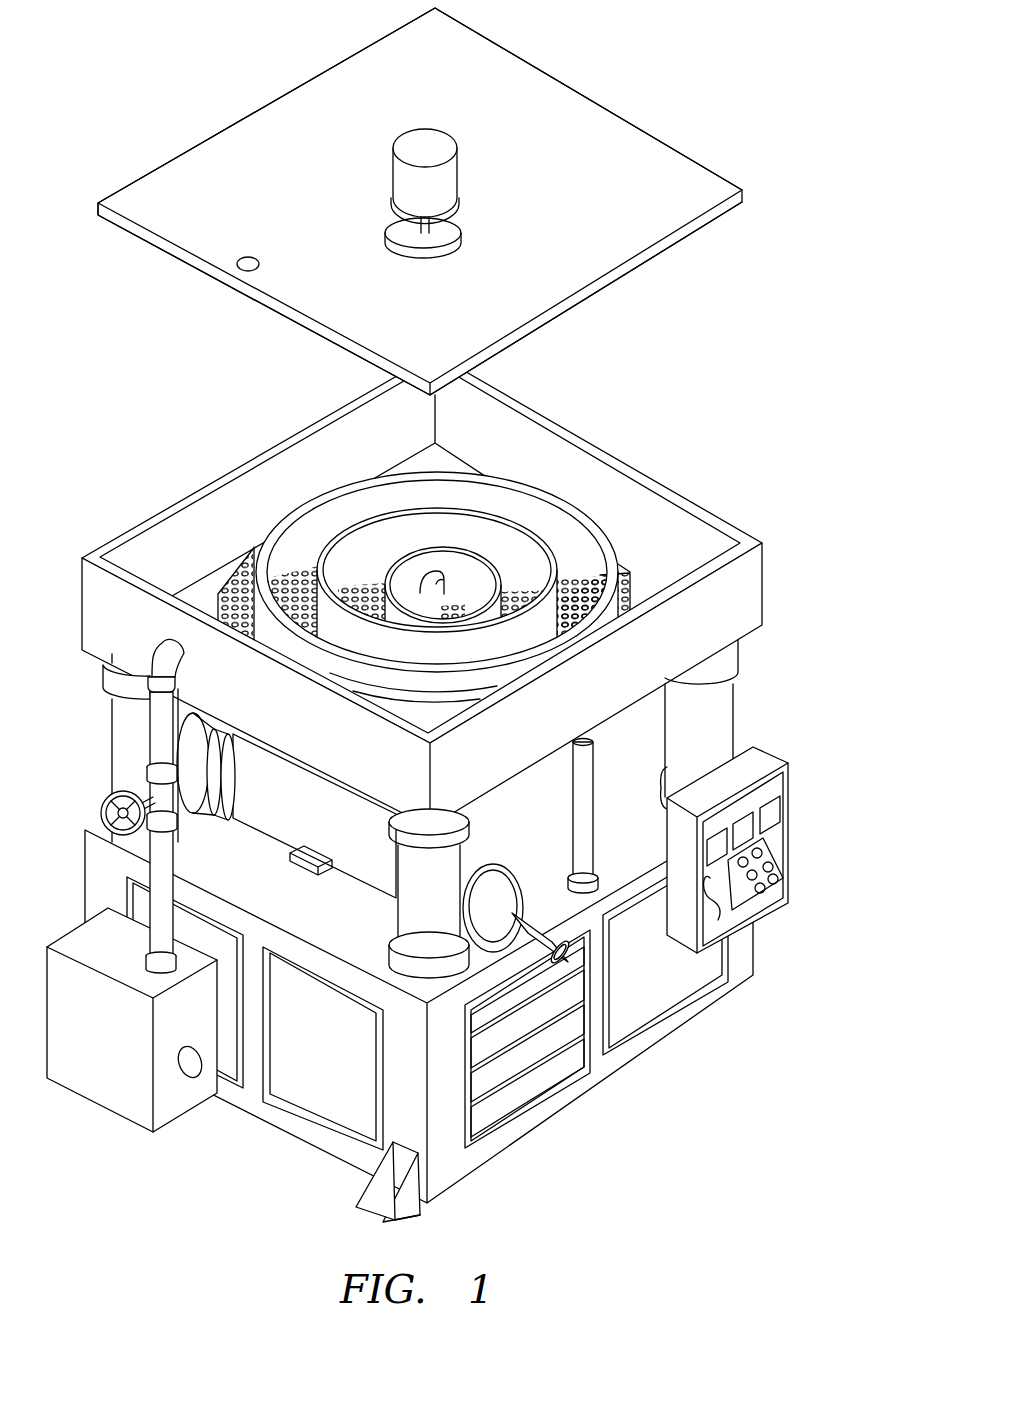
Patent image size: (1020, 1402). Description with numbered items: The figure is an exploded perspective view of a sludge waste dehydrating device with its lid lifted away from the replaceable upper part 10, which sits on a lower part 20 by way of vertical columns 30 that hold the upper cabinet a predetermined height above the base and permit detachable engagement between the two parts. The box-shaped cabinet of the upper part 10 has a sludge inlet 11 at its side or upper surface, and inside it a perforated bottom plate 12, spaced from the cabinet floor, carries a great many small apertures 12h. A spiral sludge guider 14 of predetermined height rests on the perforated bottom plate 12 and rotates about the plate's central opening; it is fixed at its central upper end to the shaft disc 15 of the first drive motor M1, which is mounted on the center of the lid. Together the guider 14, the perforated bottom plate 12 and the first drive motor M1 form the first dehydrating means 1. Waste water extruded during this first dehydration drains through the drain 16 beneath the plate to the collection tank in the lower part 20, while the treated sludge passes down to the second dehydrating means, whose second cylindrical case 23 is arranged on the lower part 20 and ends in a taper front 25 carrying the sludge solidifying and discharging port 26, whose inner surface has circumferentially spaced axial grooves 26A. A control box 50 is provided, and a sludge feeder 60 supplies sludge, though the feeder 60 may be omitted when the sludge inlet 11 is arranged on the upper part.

The first drive motor M1 is at (450, 180).
The shaft disc 15 is at (452, 233).
The sludge inlet 11 is at (213, 230).
The upper part 10 is at (673, 368).
The first dehydrating means 1 is at (574, 418).
The spiral sludge guider 14 is at (285, 520).
The perforated bottom plate 12 is at (580, 585).
The small apertures 12h is at (600, 618).
The column 30 is at (720, 715).
The drain 16 is at (583, 803).
The control box 50 is at (782, 832).
The taper front 25 is at (500, 903).
The sludge solidifying and discharging port 26 is at (540, 935).
The axial grooves 26A is at (564, 963).
The second cylindrical case 23 is at (355, 863).
The lower part 20 is at (703, 1092).
The sludge feeder 60 is at (98, 1082).